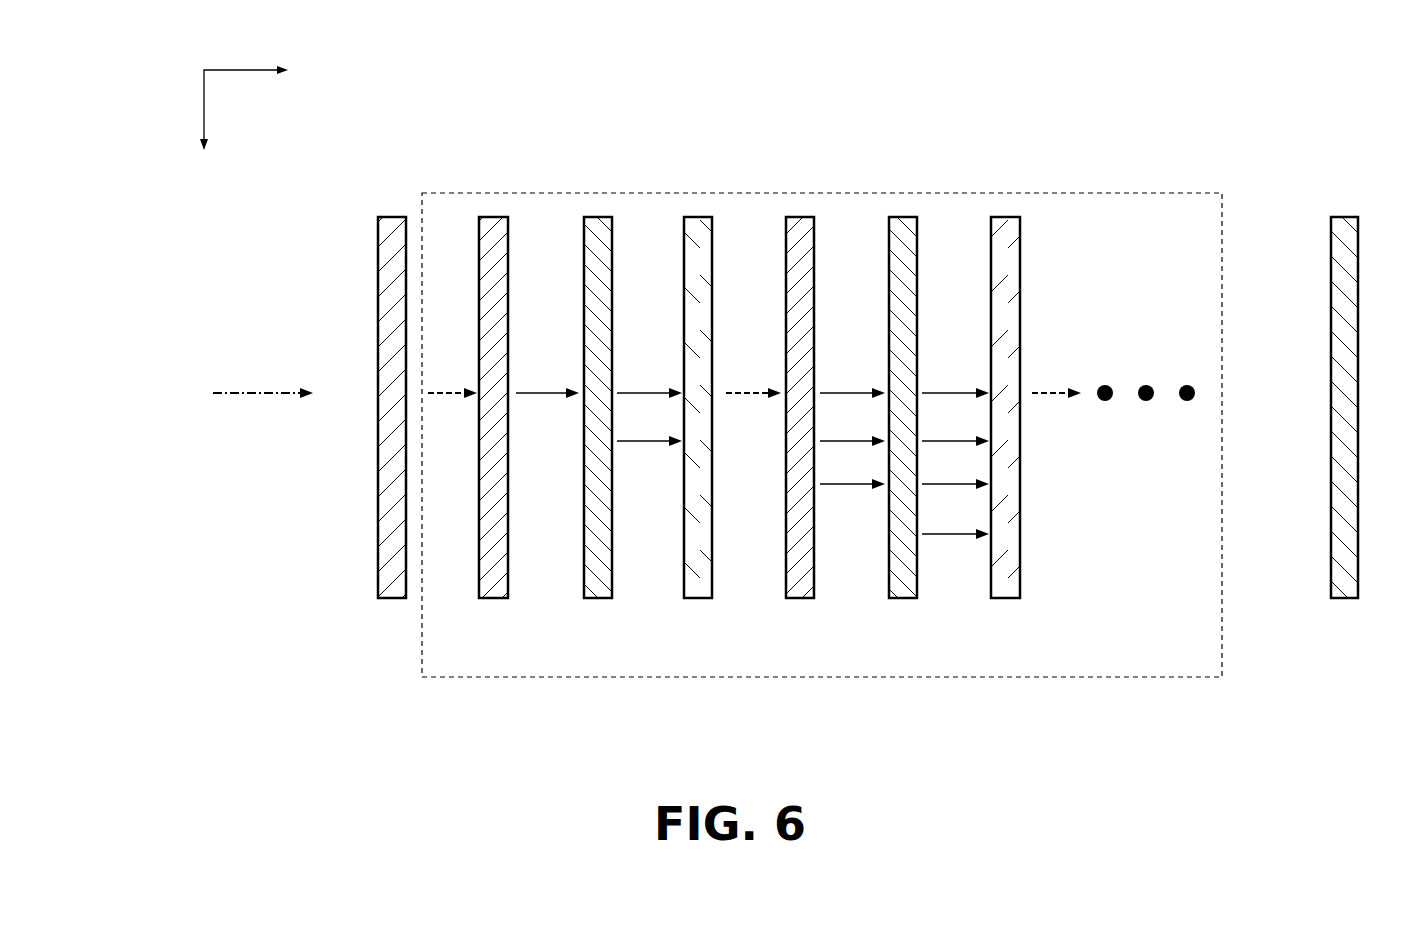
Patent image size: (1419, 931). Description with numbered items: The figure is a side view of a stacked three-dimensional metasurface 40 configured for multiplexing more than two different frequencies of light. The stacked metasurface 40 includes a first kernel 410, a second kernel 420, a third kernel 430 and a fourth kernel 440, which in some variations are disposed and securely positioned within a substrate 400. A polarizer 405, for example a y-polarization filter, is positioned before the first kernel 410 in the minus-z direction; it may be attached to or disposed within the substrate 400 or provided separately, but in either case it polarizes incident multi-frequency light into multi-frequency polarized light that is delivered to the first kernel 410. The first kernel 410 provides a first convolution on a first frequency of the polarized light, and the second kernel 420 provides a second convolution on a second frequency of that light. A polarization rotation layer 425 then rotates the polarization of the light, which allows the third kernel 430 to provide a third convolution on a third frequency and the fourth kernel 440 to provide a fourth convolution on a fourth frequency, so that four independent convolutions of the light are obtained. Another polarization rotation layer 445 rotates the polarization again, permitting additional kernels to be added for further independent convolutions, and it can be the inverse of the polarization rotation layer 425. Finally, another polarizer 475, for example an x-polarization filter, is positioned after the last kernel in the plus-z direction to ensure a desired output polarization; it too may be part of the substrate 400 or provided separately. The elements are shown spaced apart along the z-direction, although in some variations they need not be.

The stacked 3D metasurface 40 is at (842, 88).
The substrate 400 is at (548, 211).
The polarizer 405 is at (392, 599).
The first kernel 410 is at (493, 599).
The second kernel 420 is at (598, 599).
The polarization rotation layer 425 is at (698, 599).
The third kernel 430 is at (800, 599).
The fourth kernel 440 is at (903, 599).
The polarization rotation layer 445 is at (1005, 599).
The polarizer 475 is at (1344, 599).